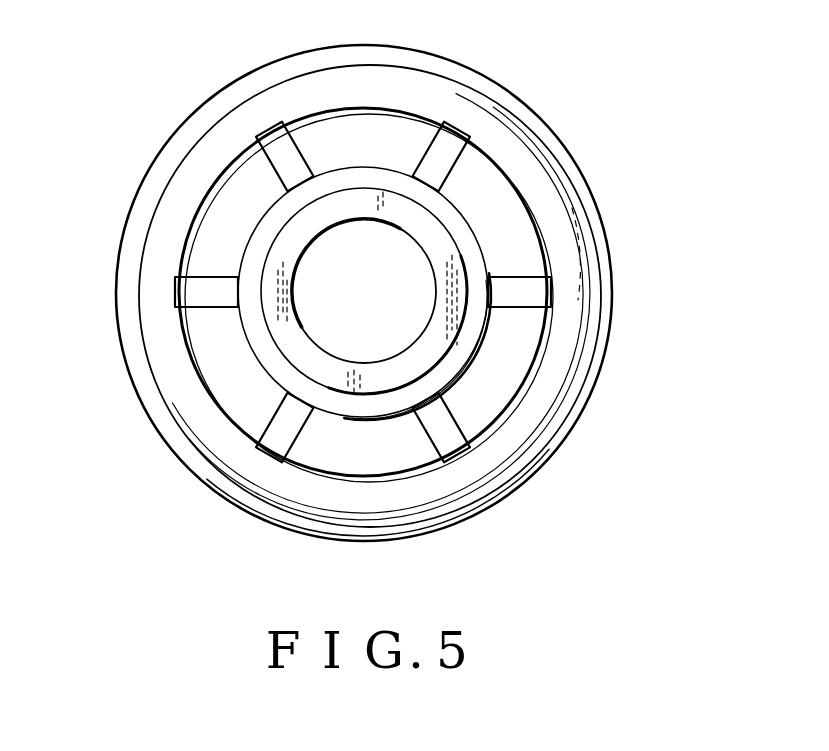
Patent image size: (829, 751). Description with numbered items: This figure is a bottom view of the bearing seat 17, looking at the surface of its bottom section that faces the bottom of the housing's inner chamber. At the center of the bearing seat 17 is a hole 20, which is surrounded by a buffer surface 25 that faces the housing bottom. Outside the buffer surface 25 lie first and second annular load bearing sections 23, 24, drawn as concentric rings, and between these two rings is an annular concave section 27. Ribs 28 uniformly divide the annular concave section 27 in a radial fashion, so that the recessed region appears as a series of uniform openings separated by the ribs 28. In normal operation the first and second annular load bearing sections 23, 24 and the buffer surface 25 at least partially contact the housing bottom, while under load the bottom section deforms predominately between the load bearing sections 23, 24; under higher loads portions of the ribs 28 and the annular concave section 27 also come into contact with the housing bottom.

The bearing seat 17 is at (607, 338).
The hole 20 is at (343, 362).
The first annular load bearing section 23 is at (552, 203).
The second annular load bearing section 24 is at (265, 232).
The buffer surface 25 is at (413, 213).
The annular concave section 27 is at (415, 135).
The ribs 28 is at (288, 155).